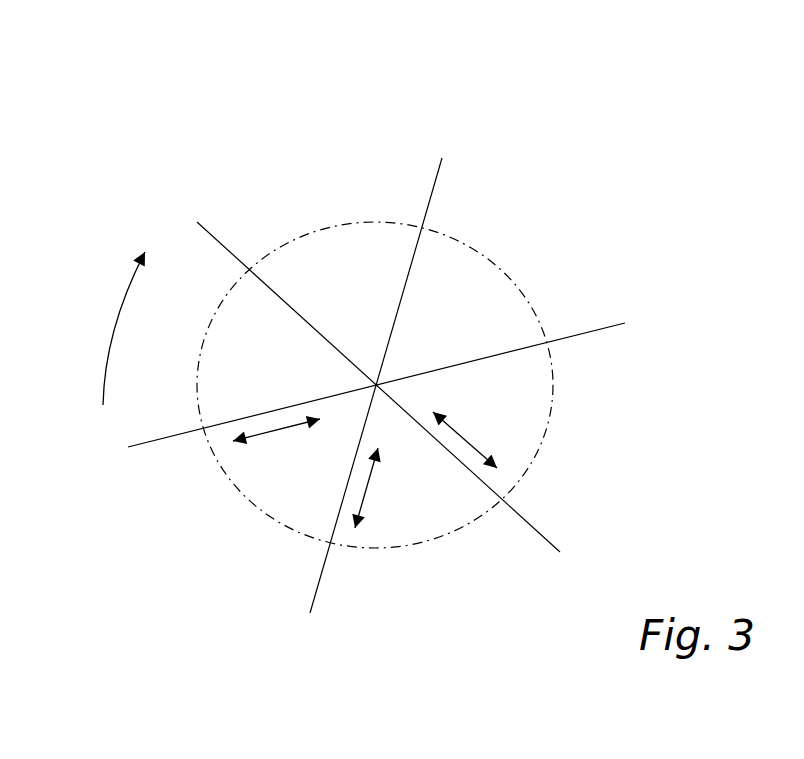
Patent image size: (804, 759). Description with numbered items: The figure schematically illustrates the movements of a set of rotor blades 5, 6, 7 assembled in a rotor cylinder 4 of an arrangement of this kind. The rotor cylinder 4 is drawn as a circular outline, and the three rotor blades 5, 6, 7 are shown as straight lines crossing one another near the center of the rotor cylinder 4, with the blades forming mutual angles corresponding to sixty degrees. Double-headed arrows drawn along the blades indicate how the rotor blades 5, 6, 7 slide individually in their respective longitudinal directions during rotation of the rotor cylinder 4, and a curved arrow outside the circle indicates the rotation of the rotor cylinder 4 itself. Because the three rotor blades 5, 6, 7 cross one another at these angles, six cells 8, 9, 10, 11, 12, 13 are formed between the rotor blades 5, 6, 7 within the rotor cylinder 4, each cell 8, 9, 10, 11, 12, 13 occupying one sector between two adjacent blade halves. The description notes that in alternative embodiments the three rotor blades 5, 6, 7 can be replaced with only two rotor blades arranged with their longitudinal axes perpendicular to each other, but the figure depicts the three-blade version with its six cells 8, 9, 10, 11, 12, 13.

The rotor cylinder 4 is at (484, 408).
The rotor blade 5 is at (427, 371).
The rotor blade 6 is at (378, 358).
The rotor blade 7 is at (388, 333).
The cell 8 is at (542, 292).
The cell 9 is at (542, 396).
The cell 10 is at (437, 611).
The cell 11 is at (216, 561).
The cell 12 is at (132, 354).
The cell 13 is at (375, 289).